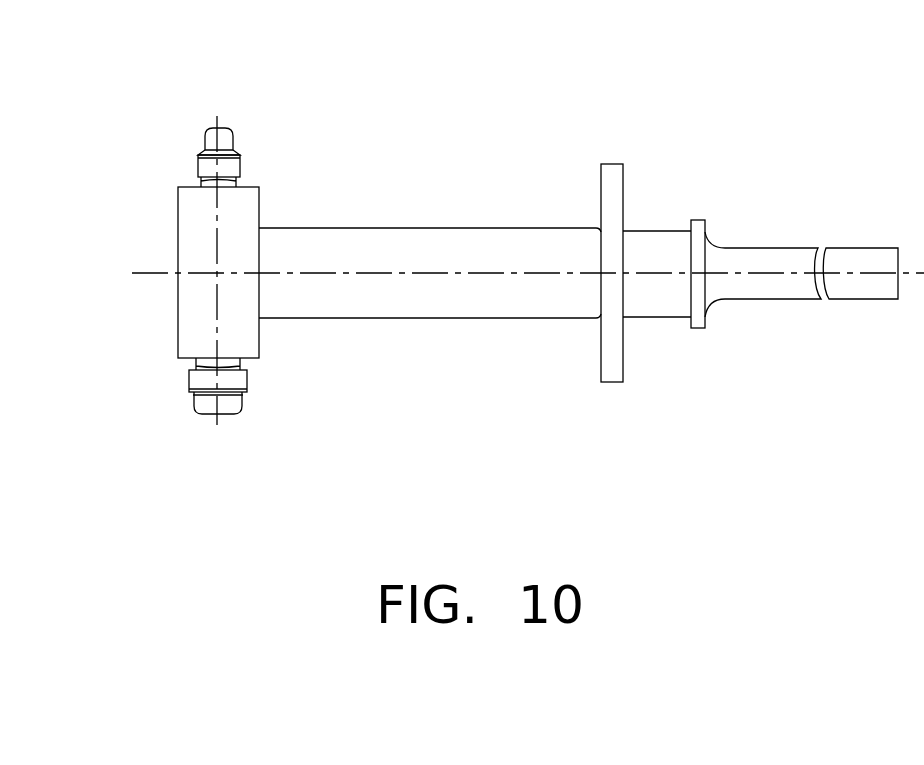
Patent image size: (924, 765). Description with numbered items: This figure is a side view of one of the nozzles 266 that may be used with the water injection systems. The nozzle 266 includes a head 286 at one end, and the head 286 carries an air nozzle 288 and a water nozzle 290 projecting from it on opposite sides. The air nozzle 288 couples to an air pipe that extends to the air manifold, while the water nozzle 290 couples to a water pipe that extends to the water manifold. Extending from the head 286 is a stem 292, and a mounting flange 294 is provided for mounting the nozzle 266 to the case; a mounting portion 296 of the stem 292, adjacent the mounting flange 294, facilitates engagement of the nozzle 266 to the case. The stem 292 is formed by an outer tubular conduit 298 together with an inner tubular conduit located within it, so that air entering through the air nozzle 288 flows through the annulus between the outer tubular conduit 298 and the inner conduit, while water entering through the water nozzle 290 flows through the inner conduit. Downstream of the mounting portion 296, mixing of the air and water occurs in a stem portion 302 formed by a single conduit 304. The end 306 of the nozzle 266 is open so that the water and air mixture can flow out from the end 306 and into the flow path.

The nozzle 266 is at (535, 55).
The head 286 is at (178, 215).
The air nozzle 288 is at (224, 418).
The water nozzle 290 is at (225, 128).
The stem 292 is at (362, 227).
The mounting flange 294 is at (613, 163).
The mounting portion 296 is at (653, 231).
The outer tubular conduit 298 is at (370, 318).
The stem portion 302 is at (765, 285).
The single conduit 304 is at (782, 247).
The end 306 is at (902, 260).